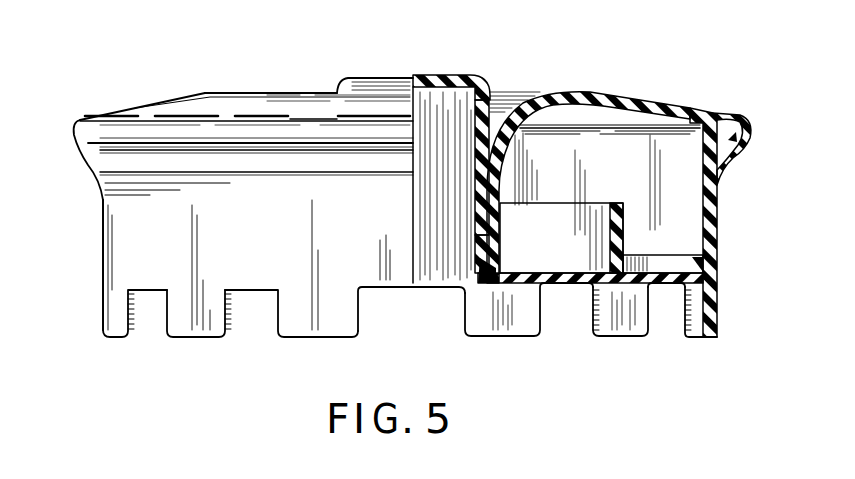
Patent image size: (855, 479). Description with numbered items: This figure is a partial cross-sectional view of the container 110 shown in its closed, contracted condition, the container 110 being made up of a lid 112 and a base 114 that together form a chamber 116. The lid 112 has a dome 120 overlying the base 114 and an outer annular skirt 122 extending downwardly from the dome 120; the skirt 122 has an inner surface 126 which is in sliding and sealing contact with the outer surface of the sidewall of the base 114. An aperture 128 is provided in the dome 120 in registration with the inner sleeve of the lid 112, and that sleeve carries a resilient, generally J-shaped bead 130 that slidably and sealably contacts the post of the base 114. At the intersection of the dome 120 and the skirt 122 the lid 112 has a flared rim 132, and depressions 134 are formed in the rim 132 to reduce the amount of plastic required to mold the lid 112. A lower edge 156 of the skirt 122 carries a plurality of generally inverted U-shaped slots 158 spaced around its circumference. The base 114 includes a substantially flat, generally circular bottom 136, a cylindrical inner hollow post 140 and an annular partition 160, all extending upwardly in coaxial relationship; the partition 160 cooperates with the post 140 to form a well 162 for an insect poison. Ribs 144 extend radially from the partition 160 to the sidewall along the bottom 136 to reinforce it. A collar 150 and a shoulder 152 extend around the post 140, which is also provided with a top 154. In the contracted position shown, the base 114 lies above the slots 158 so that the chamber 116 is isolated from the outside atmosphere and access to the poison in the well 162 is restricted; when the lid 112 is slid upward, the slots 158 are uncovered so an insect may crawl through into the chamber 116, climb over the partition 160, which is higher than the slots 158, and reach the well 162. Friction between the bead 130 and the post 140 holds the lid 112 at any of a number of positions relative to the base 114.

The container 110 is at (190, 78).
The lid 112 is at (305, 76).
The base 114 is at (519, 346).
The chamber 116 is at (620, 122).
The dome 120 is at (162, 112).
The outer annular skirt 122 is at (118, 277).
The inner surface 126 is at (690, 117).
The aperture 128 is at (498, 108).
The bead 130 is at (485, 249).
The flared rim 132 is at (72, 127).
The depressions 134 is at (730, 122).
The bottom 136 is at (557, 273).
The inner hollow post 140 is at (460, 222).
The ribs 144 is at (662, 267).
The collar 150 is at (483, 267).
The shoulder 152 is at (483, 200).
The top 154 is at (423, 75).
The lower edge 156 is at (198, 337).
The slots 158 is at (376, 310).
The annular partition 160 is at (618, 223).
The well 162 is at (522, 253).